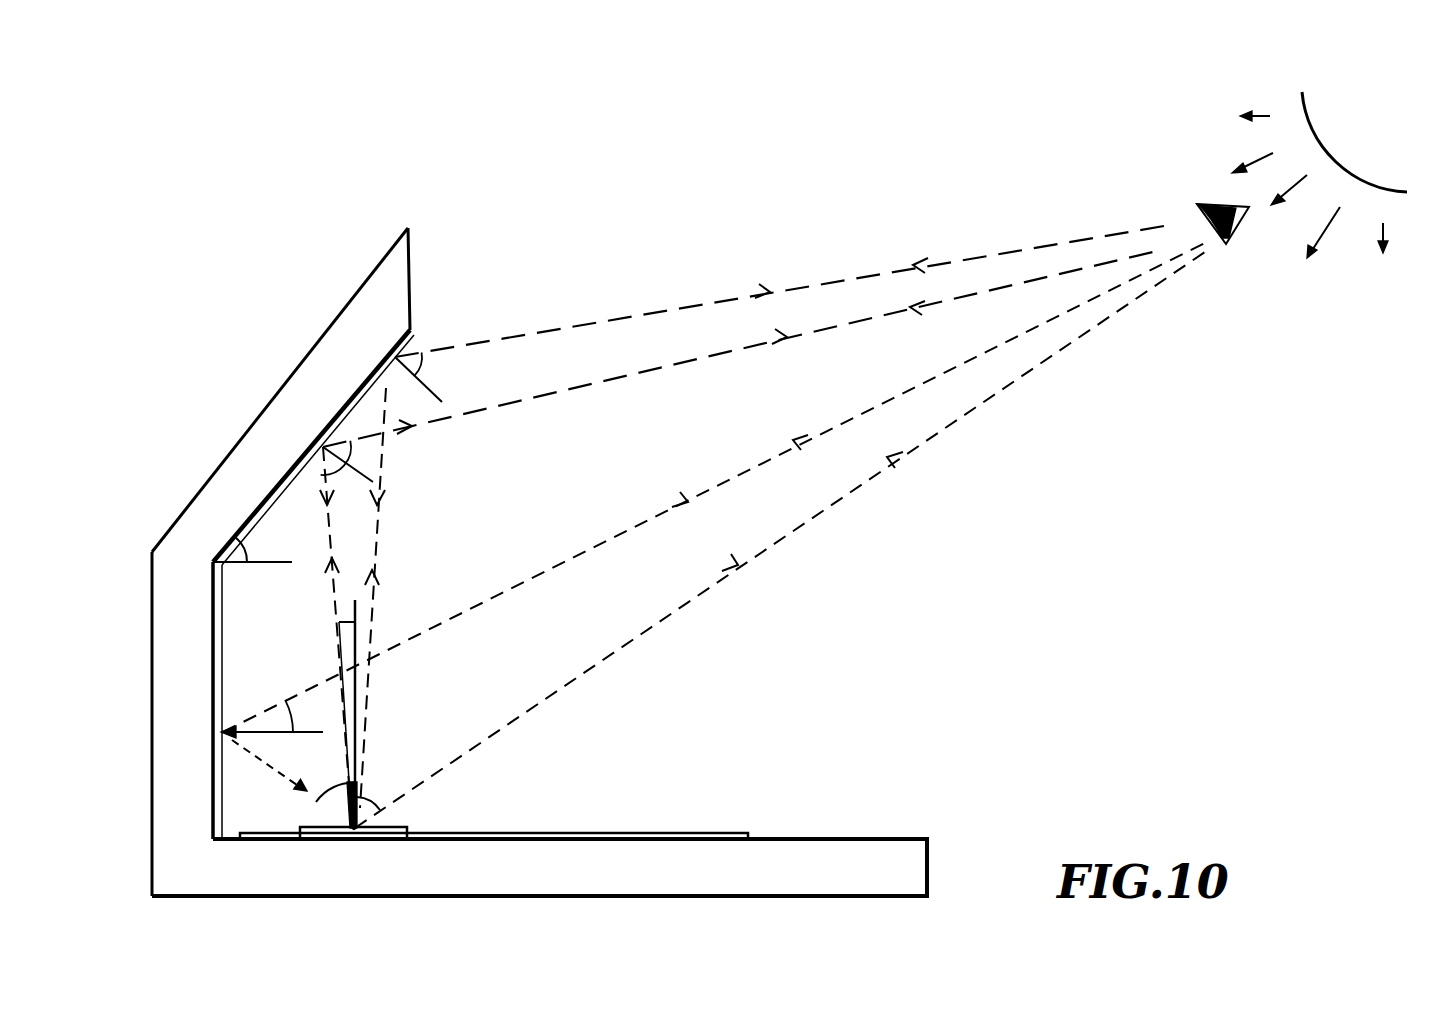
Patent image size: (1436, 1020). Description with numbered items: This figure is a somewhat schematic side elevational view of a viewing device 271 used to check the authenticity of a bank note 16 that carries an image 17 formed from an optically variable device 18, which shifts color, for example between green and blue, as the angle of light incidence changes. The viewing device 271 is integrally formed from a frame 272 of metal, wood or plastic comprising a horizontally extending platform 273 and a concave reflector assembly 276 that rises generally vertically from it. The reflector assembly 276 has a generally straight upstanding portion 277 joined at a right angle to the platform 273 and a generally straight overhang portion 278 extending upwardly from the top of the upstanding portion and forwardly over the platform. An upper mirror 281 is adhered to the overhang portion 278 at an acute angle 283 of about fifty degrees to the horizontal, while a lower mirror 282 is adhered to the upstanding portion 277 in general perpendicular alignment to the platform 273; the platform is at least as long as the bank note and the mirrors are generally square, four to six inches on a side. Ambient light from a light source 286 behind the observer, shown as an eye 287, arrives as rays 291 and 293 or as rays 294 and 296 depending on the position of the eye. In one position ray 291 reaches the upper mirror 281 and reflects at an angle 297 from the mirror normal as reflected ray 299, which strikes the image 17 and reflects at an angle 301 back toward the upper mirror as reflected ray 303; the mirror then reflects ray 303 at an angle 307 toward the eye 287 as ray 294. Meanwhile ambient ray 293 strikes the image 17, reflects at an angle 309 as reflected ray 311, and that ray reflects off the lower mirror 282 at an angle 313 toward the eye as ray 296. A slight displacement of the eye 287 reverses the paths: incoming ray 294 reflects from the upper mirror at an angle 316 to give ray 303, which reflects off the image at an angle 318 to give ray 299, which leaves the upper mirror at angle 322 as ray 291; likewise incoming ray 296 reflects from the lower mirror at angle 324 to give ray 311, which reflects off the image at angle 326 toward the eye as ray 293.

The bank note 16 is at (710, 832).
The image 17 is at (385, 826).
The optically variable device 18 is at (407, 830).
The viewing device 271 is at (259, 358).
The frame 272 is at (196, 491).
The platform 273 is at (893, 876).
The reflector assembly 276 is at (151, 594).
The upstanding portion 277 is at (172, 708).
The overhang portion 278 is at (250, 437).
The upper mirror 281 is at (283, 493).
The lower mirror 282 is at (223, 692).
The acute angle 283 is at (278, 562).
The light source 286 is at (1300, 133).
The eye 287 is at (1240, 227).
The ray 291 is at (738, 349).
The ray 293 is at (862, 478).
The ray 294 is at (678, 306).
The ray 296 is at (722, 483).
The angle 297 is at (348, 476).
The reflected ray 299 is at (333, 593).
The angle 301 is at (360, 647).
The reflected ray 303 is at (384, 460).
The angle 307 is at (421, 356).
The angle 309 is at (314, 801).
The reflected ray 311 is at (287, 783).
The angle 313 is at (292, 707).
The angle 316 is at (404, 380).
The angle 318 is at (378, 597).
The angle 322 is at (353, 447).
The angle 324 is at (262, 760).
The angle 326 is at (372, 800).